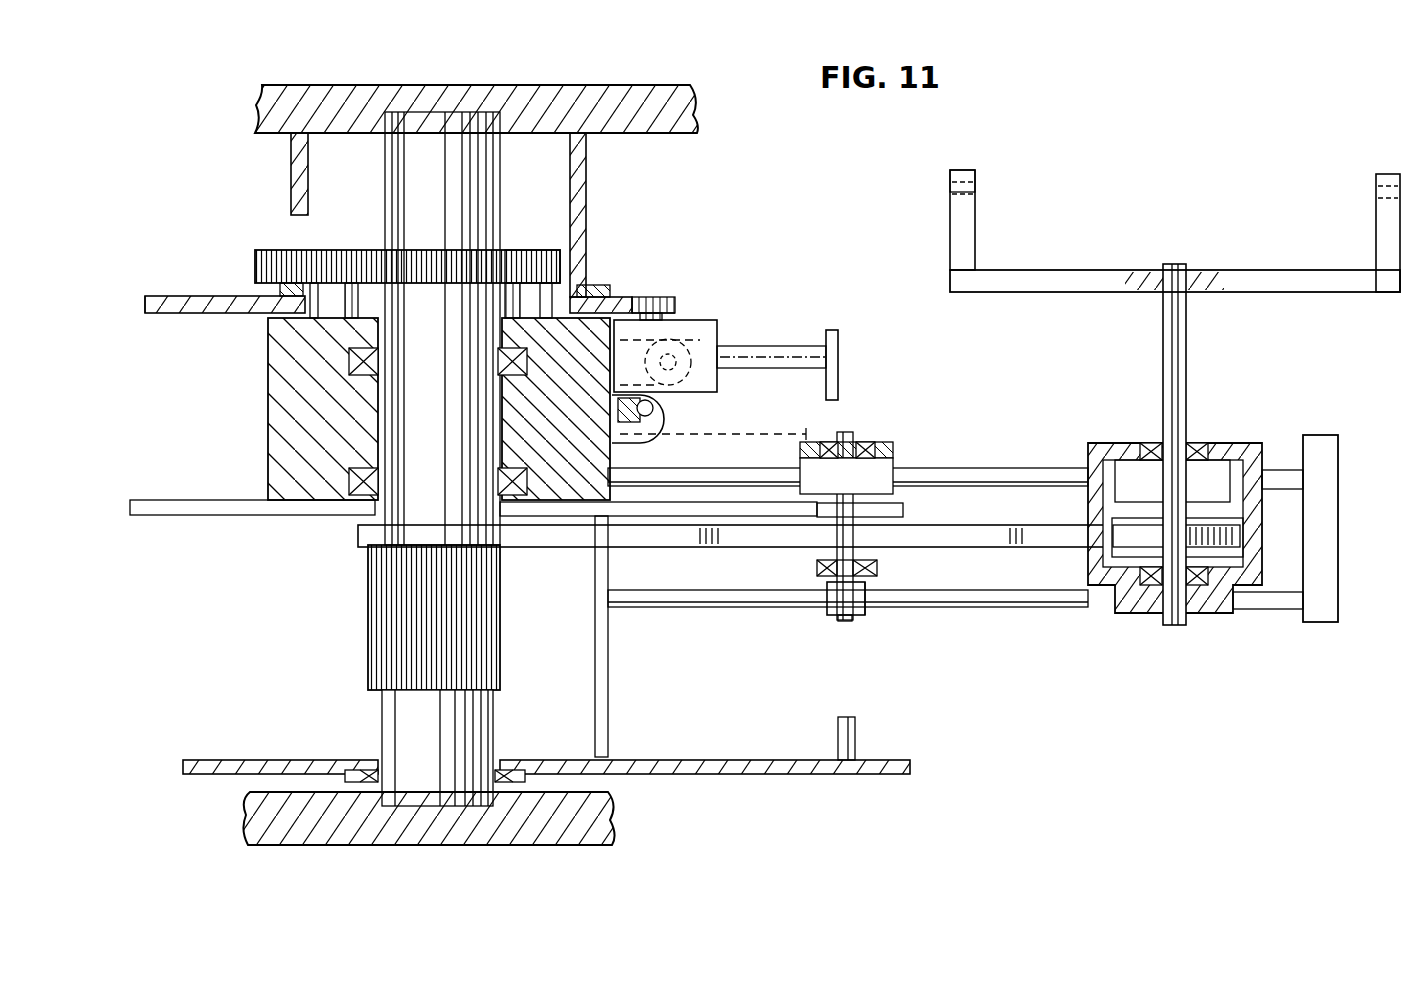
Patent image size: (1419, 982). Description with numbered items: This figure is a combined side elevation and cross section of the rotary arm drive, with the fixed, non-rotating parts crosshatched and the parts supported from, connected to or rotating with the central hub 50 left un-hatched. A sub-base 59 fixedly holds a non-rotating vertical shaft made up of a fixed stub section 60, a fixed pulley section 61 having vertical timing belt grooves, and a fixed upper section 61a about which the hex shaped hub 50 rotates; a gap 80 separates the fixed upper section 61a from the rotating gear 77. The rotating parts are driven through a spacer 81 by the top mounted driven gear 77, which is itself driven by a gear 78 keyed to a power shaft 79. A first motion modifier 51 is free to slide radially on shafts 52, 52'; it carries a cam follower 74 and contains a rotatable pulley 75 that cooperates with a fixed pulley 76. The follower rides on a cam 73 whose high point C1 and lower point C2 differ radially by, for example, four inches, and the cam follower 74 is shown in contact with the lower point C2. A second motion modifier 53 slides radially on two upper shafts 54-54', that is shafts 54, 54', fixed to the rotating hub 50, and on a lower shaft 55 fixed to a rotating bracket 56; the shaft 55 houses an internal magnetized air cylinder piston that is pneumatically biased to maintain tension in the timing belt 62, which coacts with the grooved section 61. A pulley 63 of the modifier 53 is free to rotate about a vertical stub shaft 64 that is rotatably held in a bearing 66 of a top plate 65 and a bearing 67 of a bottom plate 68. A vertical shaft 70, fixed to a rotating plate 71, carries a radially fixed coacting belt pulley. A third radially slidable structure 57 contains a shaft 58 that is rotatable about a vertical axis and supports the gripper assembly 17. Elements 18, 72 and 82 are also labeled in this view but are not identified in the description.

The gripper assembly 17 is at (1025, 283).
The frame post 18 is at (950, 180).
The central hub 50 is at (290, 395).
The first motion modifier 51 is at (708, 332).
The shaft 52' is at (781, 340).
The shaft 52 is at (781, 340).
The second motion modifier 53 is at (910, 442).
The upper shafts 54-54' is at (713, 434).
The upper shaft 54 is at (713, 434).
The upper shaft 54' is at (713, 434).
The lower shaft 55 is at (950, 600).
The rotating bracket 56 is at (600, 650).
The third radially slidable structure 57 is at (1130, 442).
The shaft 58 is at (1175, 385).
The sub-base 59 is at (305, 835).
The fixed stub section 60 is at (380, 730).
The fixed pulley section 61 is at (370, 600).
The fixed upper section 61a is at (400, 195).
The timing belt 62 is at (680, 537).
The pulley 63 is at (818, 540).
The vertical stub shaft 64 is at (842, 440).
The top plate 65 is at (885, 442).
The bearing 66 is at (865, 442).
The bearing 67 is at (862, 580).
The bottom plate 68 is at (877, 570).
The vertical shaft 70 is at (856, 735).
The rotating plate 71 is at (765, 765).
The splined bar end 72 is at (1090, 518).
The cam 73 is at (222, 300).
The cam follower 74 is at (665, 295).
The rotatable pulley 75 is at (640, 365).
The fixed pulley 76 is at (612, 466).
The main driven gear 77 is at (520, 250).
The gear 78 is at (262, 268).
The power shaft 79 is at (265, 90).
The gap 80 is at (375, 250).
The spacer 81 is at (350, 318).
The lower block 82 is at (836, 610).
The high point of cam C1 is at (145, 305).
The lower point of cam C2 is at (640, 297).